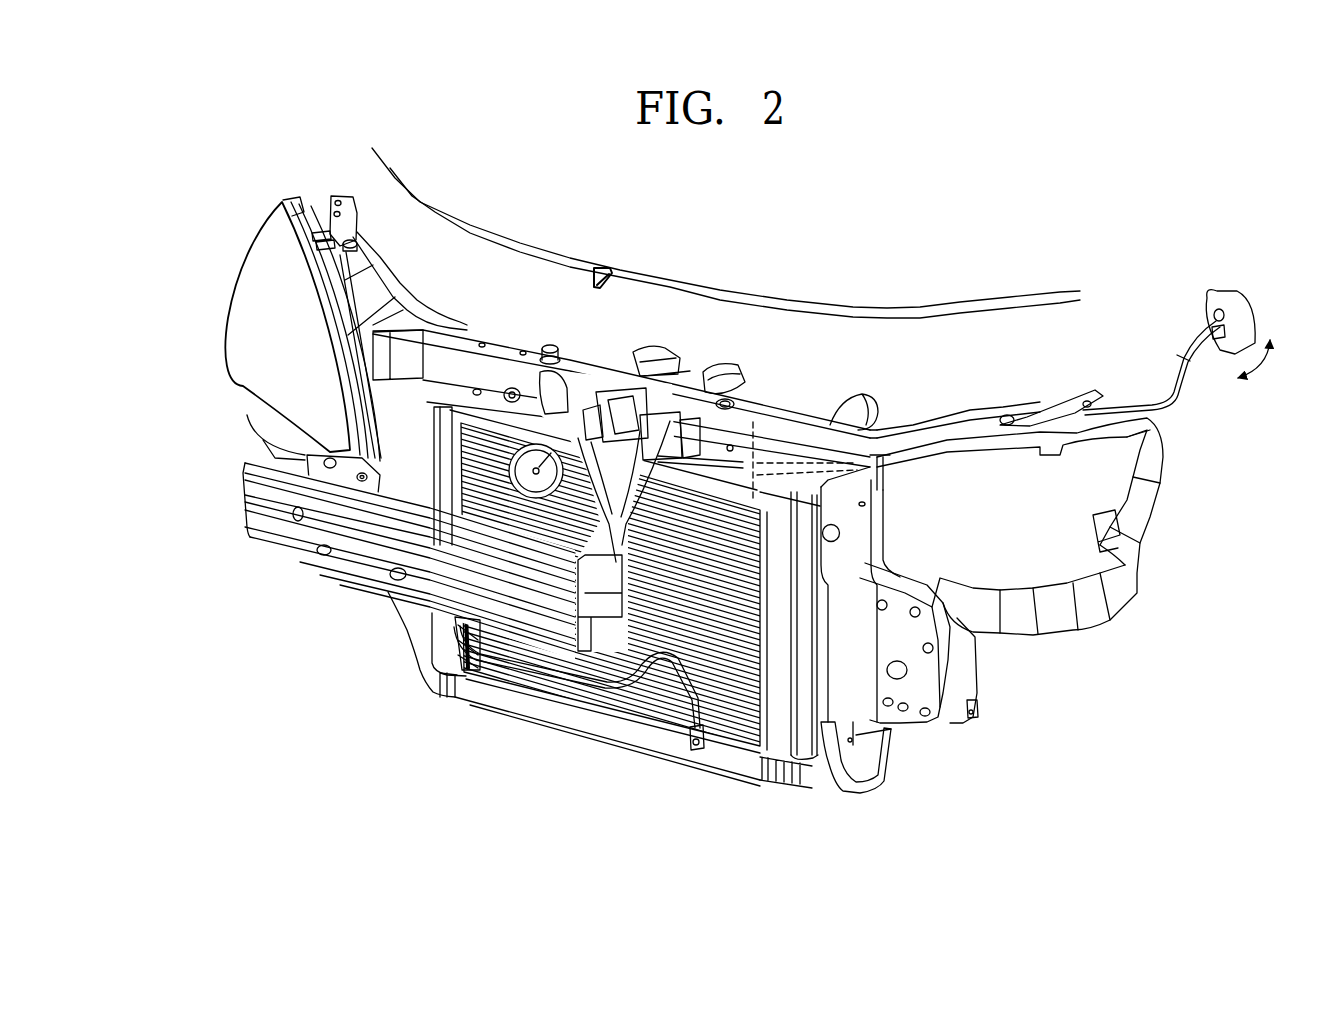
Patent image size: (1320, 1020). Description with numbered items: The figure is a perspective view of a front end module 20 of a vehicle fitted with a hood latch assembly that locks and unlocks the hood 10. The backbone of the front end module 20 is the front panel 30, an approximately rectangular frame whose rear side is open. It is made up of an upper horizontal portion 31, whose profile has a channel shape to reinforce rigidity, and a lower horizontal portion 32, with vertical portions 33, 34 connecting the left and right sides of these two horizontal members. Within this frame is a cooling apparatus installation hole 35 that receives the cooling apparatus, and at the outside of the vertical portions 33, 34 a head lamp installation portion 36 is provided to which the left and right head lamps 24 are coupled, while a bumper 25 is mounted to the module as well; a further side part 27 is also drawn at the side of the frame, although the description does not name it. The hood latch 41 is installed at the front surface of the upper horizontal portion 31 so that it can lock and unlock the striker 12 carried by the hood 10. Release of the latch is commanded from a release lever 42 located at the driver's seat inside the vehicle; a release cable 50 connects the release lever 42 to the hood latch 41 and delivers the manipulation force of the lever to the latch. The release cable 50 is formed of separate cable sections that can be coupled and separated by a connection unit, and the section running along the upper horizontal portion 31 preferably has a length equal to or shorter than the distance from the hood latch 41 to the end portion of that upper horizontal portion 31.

The hood 10 is at (906, 297).
The striker 12 is at (601, 289).
The front end module 20 is at (398, 730).
The head lamp 24 is at (245, 386).
The bumper 25 is at (306, 555).
The side panel 27 is at (935, 687).
The front panel 30 is at (780, 737).
The upper horizontal portion 31 is at (465, 340).
The lower horizontal portion 32 is at (578, 720).
The vertical portion 33 is at (437, 531).
The vertical portion 34 is at (871, 726).
The cooling apparatus installation hole 35 is at (760, 710).
The head lamp installation portion 36 is at (320, 213).
The hood latch 41 is at (588, 400).
The release lever 42 is at (1241, 304).
The release cable 50 is at (1178, 413).